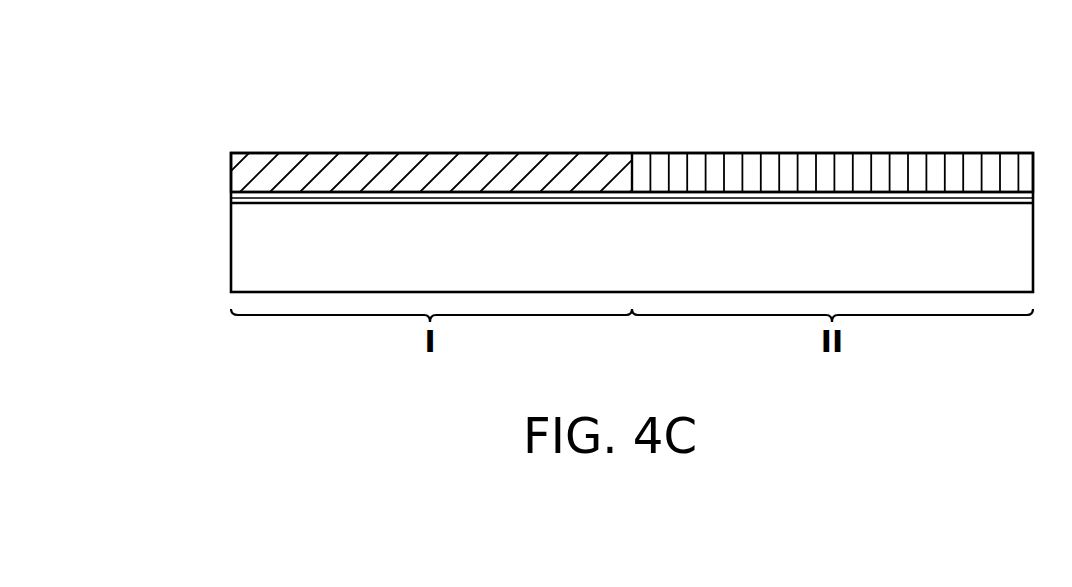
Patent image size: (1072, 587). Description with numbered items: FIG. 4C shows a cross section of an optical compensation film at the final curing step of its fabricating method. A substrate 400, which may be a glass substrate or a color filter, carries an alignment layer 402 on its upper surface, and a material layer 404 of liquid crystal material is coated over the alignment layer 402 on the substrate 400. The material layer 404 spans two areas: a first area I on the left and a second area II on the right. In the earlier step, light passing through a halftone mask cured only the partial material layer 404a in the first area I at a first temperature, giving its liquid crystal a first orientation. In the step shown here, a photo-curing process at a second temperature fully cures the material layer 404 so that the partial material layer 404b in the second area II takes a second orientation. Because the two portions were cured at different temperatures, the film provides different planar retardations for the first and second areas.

The substrate 400 is at (242, 251).
The alignment layer 402 is at (242, 197).
The material layer 404 is at (108, 60).
The partial material layer 404a is at (244, 172).
The partial material layer 404b is at (684, 163).